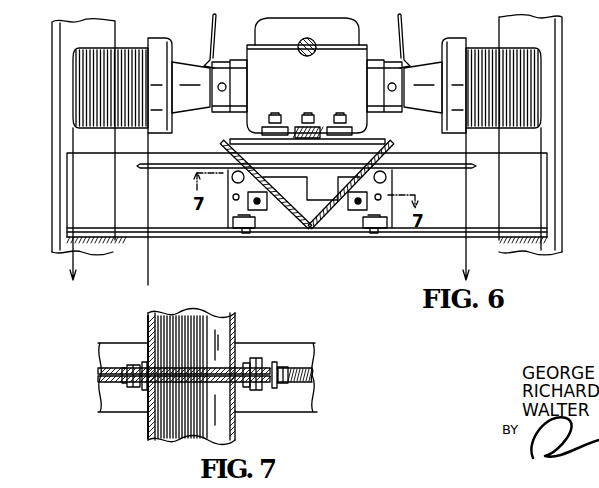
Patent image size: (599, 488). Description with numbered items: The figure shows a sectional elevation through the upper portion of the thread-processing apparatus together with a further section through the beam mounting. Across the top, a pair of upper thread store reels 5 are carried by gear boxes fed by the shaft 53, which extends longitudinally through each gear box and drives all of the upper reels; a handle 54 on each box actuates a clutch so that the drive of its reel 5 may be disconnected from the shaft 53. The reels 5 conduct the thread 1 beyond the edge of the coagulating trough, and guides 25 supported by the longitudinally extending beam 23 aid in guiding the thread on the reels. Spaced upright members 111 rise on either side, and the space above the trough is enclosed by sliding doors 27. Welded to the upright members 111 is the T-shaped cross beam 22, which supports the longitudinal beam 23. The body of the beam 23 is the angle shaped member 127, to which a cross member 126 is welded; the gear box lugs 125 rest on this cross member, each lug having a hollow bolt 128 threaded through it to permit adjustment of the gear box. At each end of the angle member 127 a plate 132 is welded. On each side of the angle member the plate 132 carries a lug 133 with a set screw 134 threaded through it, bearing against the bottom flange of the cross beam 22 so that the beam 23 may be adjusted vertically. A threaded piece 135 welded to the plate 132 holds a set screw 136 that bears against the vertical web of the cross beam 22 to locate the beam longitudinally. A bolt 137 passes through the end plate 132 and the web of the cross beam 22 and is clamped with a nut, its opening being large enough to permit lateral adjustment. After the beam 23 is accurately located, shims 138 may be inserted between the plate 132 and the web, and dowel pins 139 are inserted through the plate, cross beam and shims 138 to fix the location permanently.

In FIG. 6, the thread 1 is at (76, 265).
In FIG. 6, the reel 5 is at (73, 92).
In FIG. 6, the cross beam 22 is at (119, 224).
In FIG. 7, the cross beam 22 is at (307, 350).
In FIG. 6, the longitudinally extending beam 23 is at (226, 144).
In FIG. 7, the longitudinally extending beam 23 is at (153, 434).
In FIG. 6, the guide 25 is at (140, 166).
In FIG. 6, the sliding door 27 is at (290, 20).
In FIG. 6, the shaft 53 is at (305, 56).
In FIG. 6, the handle 54 is at (208, 22).
In FIG. 6, the upright member 111 is at (78, 24).
In FIG. 6, the lug 125 is at (330, 134).
In FIG. 6, the cross member 126 is at (335, 157).
In FIG. 6, the angle shaped member 127 is at (390, 148).
In FIG. 7, the angle shaped member 127 is at (220, 318).
In FIG. 6, the hollow bolt 128 is at (338, 116).
In FIG. 6, the plate 132 is at (358, 222).
In FIG. 7, the plate 132 is at (149, 348).
In FIG. 6, the lug 133 is at (247, 229).
In FIG. 6, the set screw 134 is at (243, 232).
In FIG. 6, the threaded piece 135 is at (355, 209).
In FIG. 7, the threaded piece 135 is at (253, 358).
In FIG. 6, the set screw 136 is at (382, 195).
In FIG. 7, the set screw 136 is at (249, 365).
In FIG. 6, the bolt 137 is at (233, 166).
In FIG. 7, the bolt 137 is at (127, 364).
In FIG. 7, the shim 138 is at (313, 378).
In FIG. 6, the dowel pin 139 is at (233, 198).
In FIG. 7, the dowel pin 139 is at (300, 390).